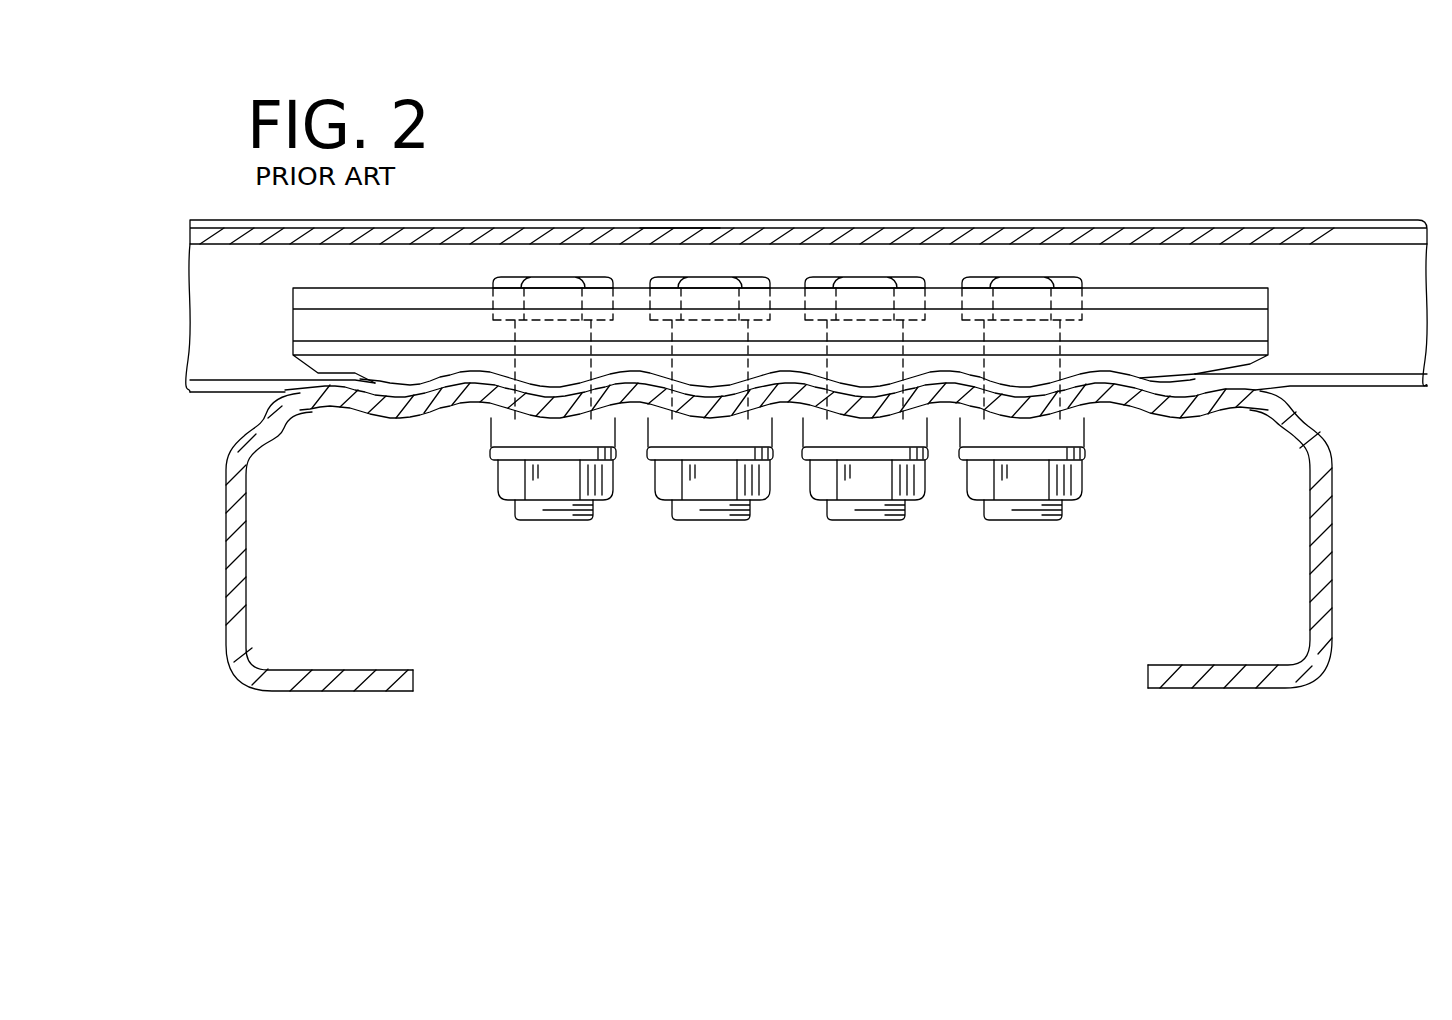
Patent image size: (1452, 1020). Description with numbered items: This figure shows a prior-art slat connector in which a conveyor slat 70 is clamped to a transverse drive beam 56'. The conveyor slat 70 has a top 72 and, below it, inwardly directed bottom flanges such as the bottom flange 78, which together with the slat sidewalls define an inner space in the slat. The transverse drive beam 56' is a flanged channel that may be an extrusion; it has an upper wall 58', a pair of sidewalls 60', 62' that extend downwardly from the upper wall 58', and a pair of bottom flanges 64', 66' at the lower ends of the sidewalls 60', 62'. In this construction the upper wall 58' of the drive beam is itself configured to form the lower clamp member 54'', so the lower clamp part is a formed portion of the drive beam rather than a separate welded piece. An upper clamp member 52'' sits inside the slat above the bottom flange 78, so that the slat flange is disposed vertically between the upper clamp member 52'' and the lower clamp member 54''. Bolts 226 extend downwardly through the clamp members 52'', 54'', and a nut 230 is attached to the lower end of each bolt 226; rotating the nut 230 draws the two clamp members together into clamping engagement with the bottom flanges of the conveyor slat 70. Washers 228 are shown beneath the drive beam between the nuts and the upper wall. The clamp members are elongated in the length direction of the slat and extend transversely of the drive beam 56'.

The conveyor slat 70 is at (506, 204).
The top 72 is at (681, 229).
The bottom flange 78 is at (1338, 382).
The upper clamp member 52'' is at (742, 329).
The lower clamp member 54'' is at (1214, 317).
The upper wall 58' is at (776, 434).
The transverse drive beam 56' is at (776, 586).
The sidewall 60' is at (273, 542).
The sidewall 62' is at (1290, 539).
The bottom flange 64' is at (351, 726).
The bottom flange 66' is at (1213, 718).
The bolt 226 is at (563, 275).
The washers 228 is at (639, 449).
The nut 230 is at (557, 493).